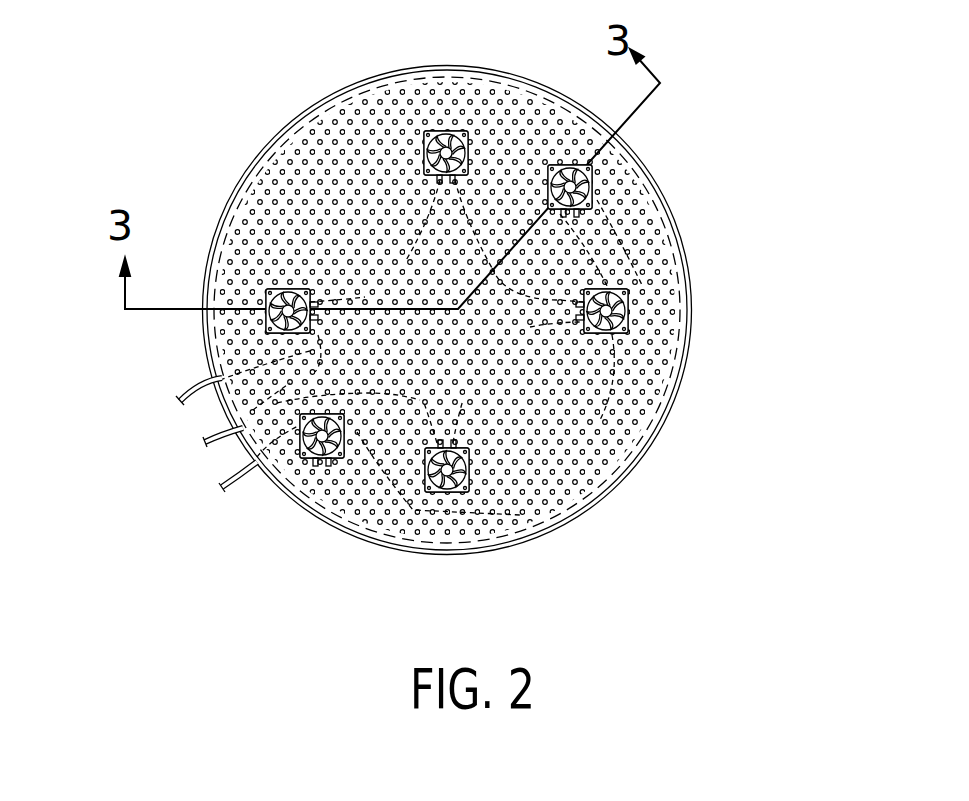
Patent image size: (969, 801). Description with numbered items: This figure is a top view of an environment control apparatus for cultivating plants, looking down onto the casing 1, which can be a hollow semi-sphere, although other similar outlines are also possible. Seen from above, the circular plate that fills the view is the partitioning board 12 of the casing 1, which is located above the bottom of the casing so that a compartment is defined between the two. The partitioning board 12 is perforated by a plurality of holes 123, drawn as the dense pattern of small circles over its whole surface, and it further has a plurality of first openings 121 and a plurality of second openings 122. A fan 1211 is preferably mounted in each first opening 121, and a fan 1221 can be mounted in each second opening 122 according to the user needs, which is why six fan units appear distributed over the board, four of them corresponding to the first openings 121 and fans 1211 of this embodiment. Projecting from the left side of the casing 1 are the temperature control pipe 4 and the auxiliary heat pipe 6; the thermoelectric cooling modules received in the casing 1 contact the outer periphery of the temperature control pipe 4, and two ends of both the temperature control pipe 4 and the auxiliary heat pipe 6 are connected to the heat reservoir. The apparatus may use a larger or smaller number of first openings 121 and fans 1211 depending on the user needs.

The casing 1 is at (596, 500).
The partitioning board 12 is at (668, 262).
The first opening 121 is at (435, 132).
The fan 1211 is at (460, 133).
The second opening 122 is at (600, 178).
The fan 1221 is at (598, 207).
The hole 123 is at (343, 112).
The temperature control pipe 4 is at (190, 400).
The auxiliary heat pipe 6 is at (233, 480).